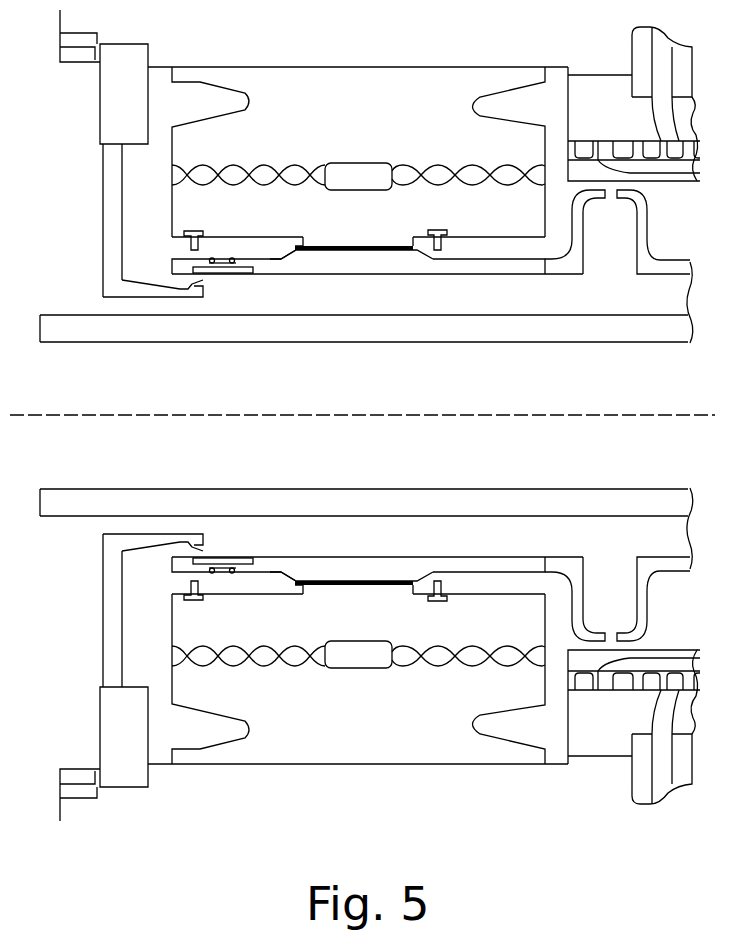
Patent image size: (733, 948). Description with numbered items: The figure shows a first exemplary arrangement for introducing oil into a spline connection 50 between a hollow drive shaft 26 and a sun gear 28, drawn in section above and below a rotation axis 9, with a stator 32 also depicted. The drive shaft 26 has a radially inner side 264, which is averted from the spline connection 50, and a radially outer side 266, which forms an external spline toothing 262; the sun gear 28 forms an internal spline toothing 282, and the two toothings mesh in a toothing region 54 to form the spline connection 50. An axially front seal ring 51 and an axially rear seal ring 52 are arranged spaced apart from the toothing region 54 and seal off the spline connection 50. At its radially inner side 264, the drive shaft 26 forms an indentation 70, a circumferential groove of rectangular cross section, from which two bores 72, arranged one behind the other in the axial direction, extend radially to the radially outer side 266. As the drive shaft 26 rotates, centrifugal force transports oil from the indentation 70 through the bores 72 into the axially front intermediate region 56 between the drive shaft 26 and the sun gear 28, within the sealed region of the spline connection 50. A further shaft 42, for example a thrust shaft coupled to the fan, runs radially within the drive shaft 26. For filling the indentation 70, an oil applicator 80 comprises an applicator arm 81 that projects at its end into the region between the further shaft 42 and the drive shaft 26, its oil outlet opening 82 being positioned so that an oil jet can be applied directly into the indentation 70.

The rotation axis 9 is at (658, 413).
The drive shaft 26 is at (505, 262).
The sun gear 28 is at (183, 208).
The stator 32 is at (445, 90).
The further shaft 42 is at (238, 325).
The spline connection 50 is at (293, 247).
The axially front seal ring 51 is at (187, 240).
The axially rear seal ring 52 is at (437, 250).
The toothing region 54 is at (347, 246).
The axially front intermediate region 56 is at (271, 581).
The indentation 70 is at (255, 270).
The bores 72 is at (233, 258).
The oil applicator 80 is at (103, 232).
The applicator arm 81 is at (135, 298).
The oil outlet opening 82 is at (199, 287).
The external spline toothing 262 is at (414, 259).
The radially inner side 264 is at (345, 274).
The radially outer side 266 is at (238, 237).
The internal spline toothing 282 is at (412, 243).